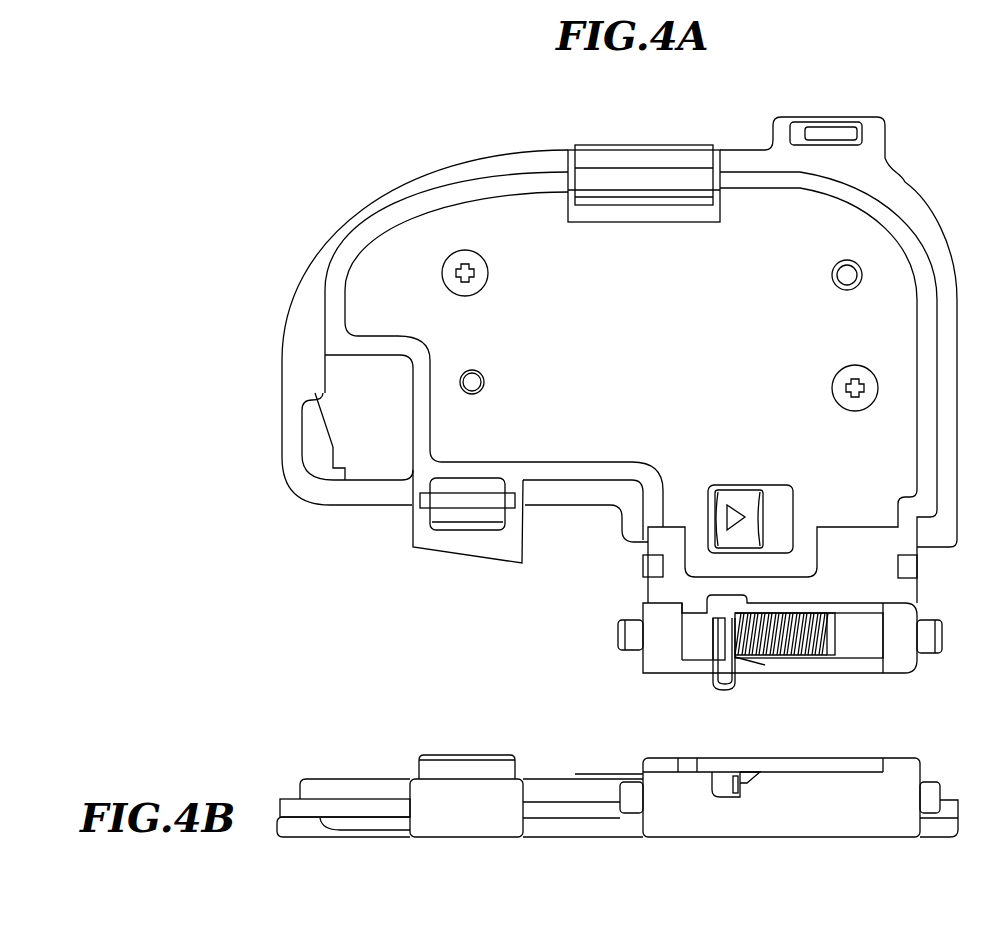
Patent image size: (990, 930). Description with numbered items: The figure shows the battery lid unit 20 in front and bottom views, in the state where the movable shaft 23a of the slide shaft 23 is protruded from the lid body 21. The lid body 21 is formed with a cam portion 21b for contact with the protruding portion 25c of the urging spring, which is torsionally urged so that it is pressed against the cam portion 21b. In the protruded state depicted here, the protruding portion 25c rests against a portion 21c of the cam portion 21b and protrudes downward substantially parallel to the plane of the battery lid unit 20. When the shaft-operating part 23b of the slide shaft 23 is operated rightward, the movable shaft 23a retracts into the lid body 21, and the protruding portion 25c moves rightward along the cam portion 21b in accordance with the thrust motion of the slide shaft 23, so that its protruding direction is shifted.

In FIG. 4A, the battery lid unit 20 is at (470, 152).
In FIG. 4B, the lid body 21 is at (883, 805).
In FIG. 4B, the cam portion 21b is at (747, 783).
In FIG. 4B, the portion of the cam portion 21c is at (723, 795).
In FIG. 4A, the slide shaft 23 is at (700, 650).
In FIG. 4A, the movable shaft 23a is at (618, 636).
In FIG. 4A, the shaft-operating part 23b is at (742, 503).
In FIG. 4A, the protruding portion 25c is at (737, 677).
In FIG. 4B, the protruding portion 25c is at (724, 790).